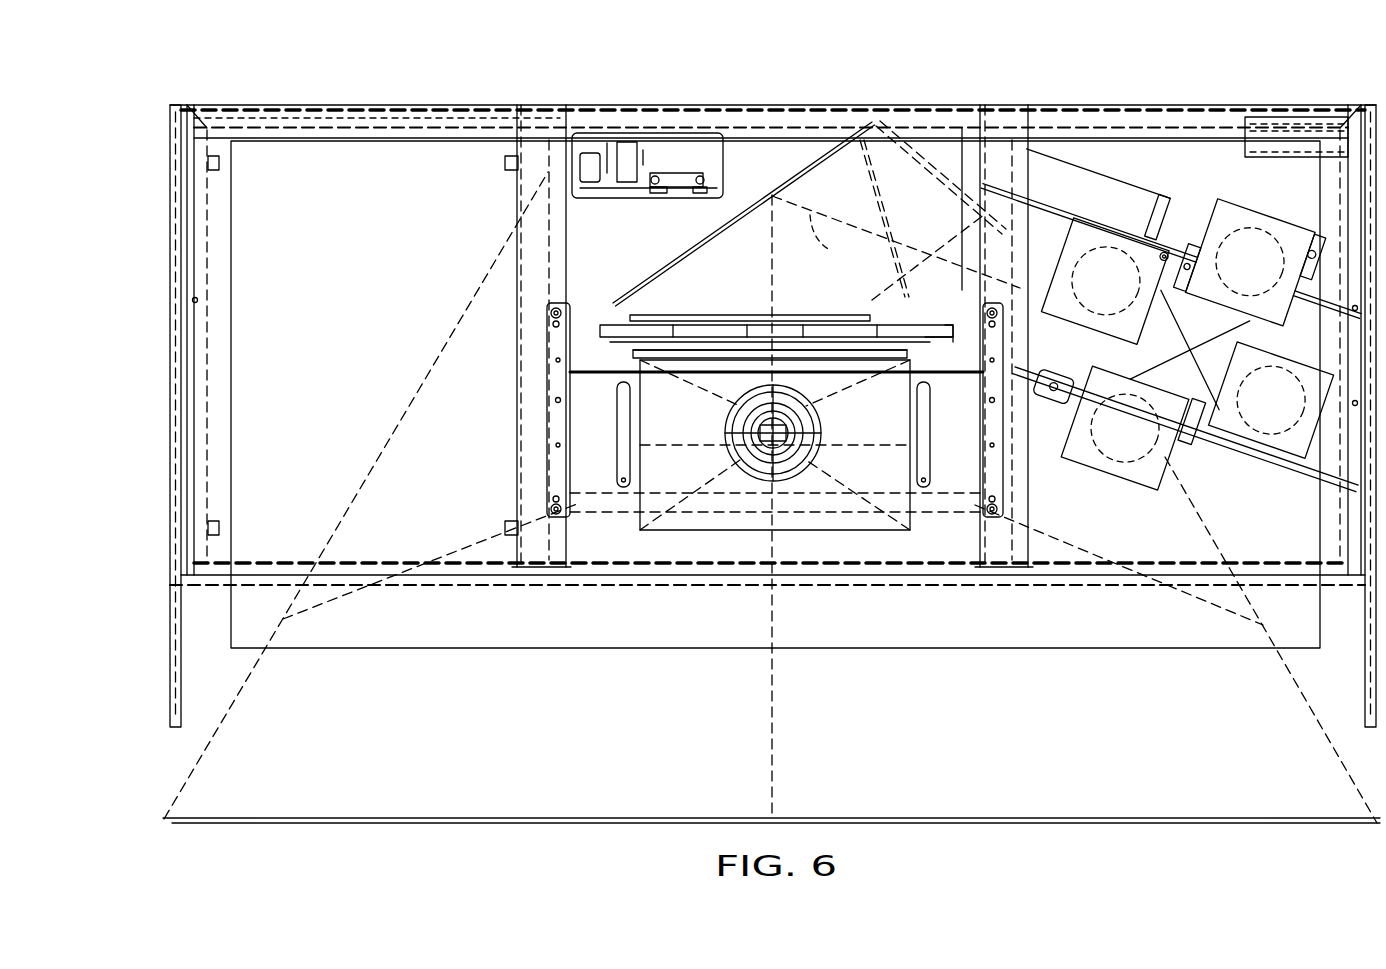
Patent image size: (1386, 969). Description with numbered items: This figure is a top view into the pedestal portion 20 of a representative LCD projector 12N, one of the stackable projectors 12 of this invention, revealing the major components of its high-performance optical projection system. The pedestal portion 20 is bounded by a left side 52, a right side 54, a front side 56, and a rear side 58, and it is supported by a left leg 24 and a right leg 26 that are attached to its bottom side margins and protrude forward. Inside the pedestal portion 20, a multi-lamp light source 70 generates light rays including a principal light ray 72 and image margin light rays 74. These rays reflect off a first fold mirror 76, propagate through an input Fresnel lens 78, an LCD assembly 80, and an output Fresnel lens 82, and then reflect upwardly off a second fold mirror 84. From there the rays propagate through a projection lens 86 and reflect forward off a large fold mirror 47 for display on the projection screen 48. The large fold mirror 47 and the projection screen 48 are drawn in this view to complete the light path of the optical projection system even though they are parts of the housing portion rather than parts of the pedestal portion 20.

The projector 12 is at (1000, 290).
The LCD projector 12N is at (1290, 88).
The pedestal portion 20 is at (1125, 105).
The left leg 24 is at (182, 646).
The right leg 26 is at (1366, 677).
The large fold mirror 47 is at (314, 166).
The projection screen and frame 48 is at (515, 817).
The left side 52 is at (197, 340).
The right side 54 is at (1358, 527).
The front side 56 is at (691, 588).
The rear side 58 is at (733, 104).
The light source 70 is at (1133, 495).
The principal light ray 72 is at (780, 266).
The image margin light rays 74 is at (897, 232).
The first fold mirror 76 is at (690, 246).
The input Fresnel lens 78 is at (740, 318).
The LCD assembly 80 is at (963, 328).
The output Fresnel lens 82 is at (836, 322).
The second fold mirror 84 is at (650, 523).
The projection lens 86 is at (812, 423).